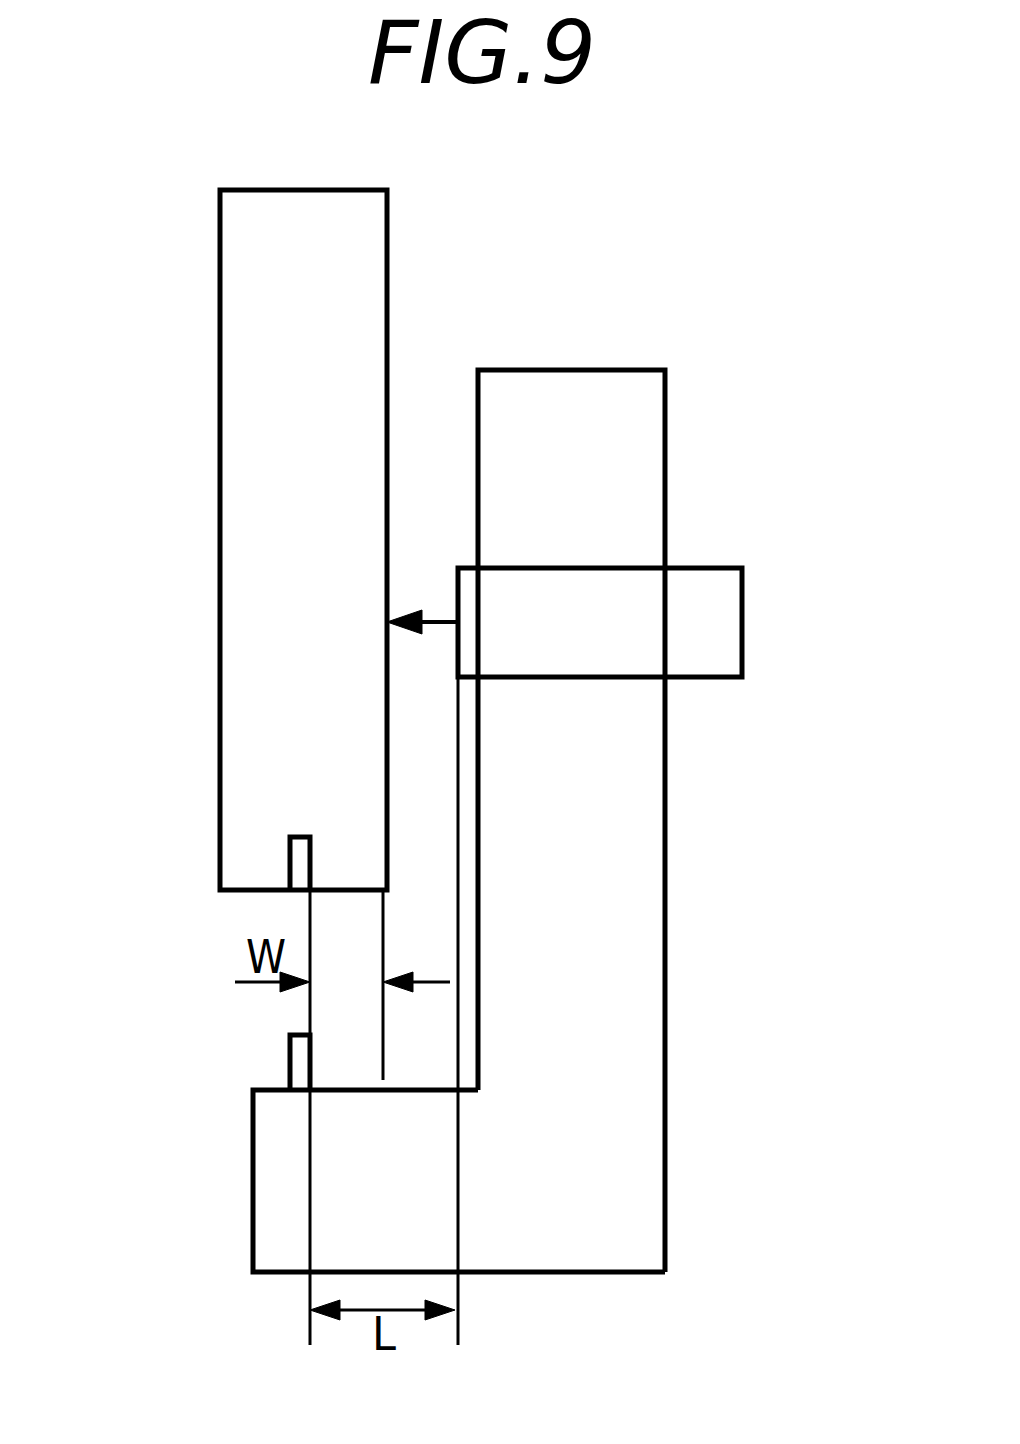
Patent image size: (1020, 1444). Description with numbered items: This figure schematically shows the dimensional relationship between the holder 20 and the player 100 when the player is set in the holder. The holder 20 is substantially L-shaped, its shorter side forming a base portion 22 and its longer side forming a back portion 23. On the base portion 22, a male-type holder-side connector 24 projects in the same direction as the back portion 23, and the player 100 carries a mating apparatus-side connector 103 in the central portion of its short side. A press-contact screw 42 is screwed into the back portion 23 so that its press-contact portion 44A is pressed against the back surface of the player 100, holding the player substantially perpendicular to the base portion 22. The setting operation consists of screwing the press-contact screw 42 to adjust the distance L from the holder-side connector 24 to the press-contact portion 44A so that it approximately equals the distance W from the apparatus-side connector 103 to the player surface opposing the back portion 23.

The player 100 is at (243, 232).
The apparatus-side connector 103 is at (297, 860).
The holder 20 is at (491, 752).
The back portion 23 is at (622, 465).
The press-contact screw 42 is at (705, 628).
The press-contact portion 44A is at (456, 585).
The base portion 22 is at (275, 1198).
The holder-side connector 24 is at (293, 1060).